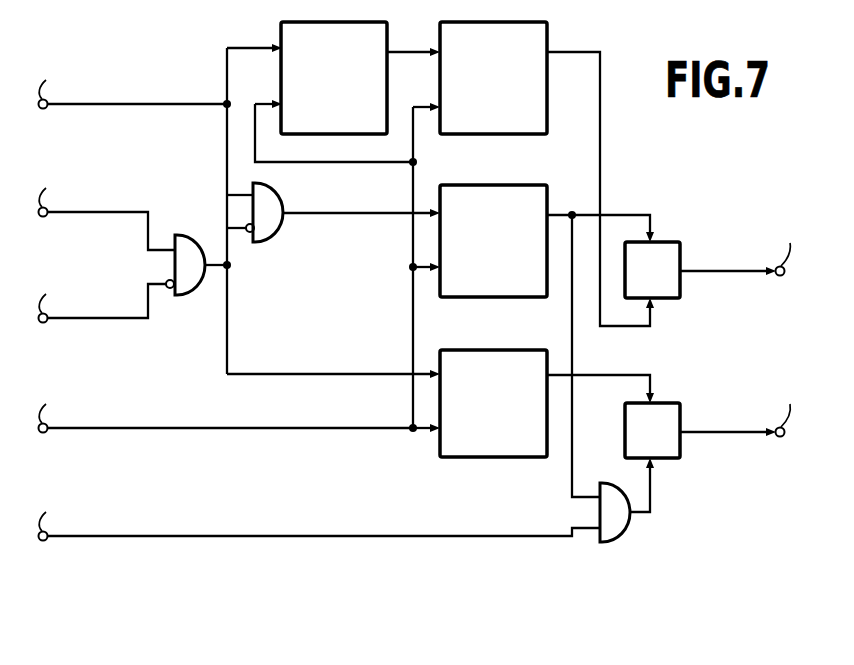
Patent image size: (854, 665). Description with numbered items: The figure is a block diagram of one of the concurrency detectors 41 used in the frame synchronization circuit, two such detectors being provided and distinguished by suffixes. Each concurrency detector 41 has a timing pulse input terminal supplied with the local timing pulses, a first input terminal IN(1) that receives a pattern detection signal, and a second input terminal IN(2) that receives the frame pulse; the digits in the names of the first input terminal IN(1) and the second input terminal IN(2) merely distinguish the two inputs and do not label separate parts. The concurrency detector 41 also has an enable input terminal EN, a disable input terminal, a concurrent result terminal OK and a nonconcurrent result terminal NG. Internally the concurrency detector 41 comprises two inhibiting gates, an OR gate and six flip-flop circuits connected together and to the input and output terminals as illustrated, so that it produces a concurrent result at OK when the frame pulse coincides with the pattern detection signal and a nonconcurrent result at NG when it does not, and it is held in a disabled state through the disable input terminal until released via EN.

The concurrency detector 41 is at (260, 559).
The first input terminal IN 1 is at (133, 83).
The second input terminal IN 2 is at (107, 208).